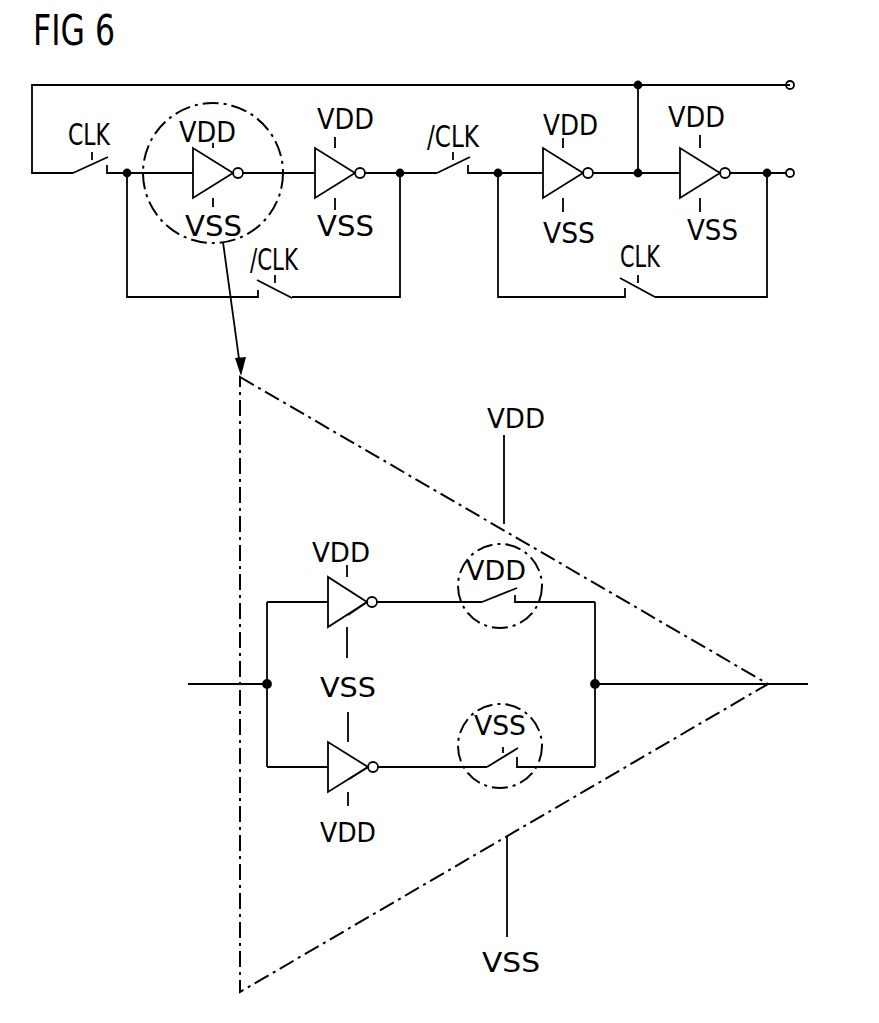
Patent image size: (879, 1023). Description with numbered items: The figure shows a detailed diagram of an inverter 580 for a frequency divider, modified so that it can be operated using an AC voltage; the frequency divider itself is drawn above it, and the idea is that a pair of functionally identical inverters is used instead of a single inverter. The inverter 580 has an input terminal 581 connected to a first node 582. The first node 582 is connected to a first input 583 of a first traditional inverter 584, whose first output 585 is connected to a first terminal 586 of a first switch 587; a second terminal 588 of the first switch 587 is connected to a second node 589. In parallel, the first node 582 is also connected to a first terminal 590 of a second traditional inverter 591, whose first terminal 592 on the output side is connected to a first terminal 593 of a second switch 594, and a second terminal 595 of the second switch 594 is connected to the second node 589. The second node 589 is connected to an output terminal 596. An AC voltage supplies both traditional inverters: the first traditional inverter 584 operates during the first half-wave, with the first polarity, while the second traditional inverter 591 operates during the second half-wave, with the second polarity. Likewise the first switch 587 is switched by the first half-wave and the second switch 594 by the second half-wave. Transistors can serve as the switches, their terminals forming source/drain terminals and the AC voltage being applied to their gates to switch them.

The inverter 580 is at (197, 569).
The input terminal 581 is at (213, 682).
The first node 582 is at (271, 682).
The first input 583 is at (327, 600).
The first traditional inverter 584 is at (355, 613).
The first output 585 is at (392, 584).
The first terminal 586 is at (490, 606).
The first switch 587 is at (466, 556).
The second terminal 588 is at (533, 605).
The second node 589 is at (598, 687).
The first terminal 590 is at (327, 770).
The second traditional inverter 591 is at (357, 774).
The first terminal 592 is at (378, 762).
The first terminal 593 is at (486, 764).
The second switch 594 is at (537, 733).
The second terminal 595 is at (508, 785).
The output terminal 596 is at (784, 665).